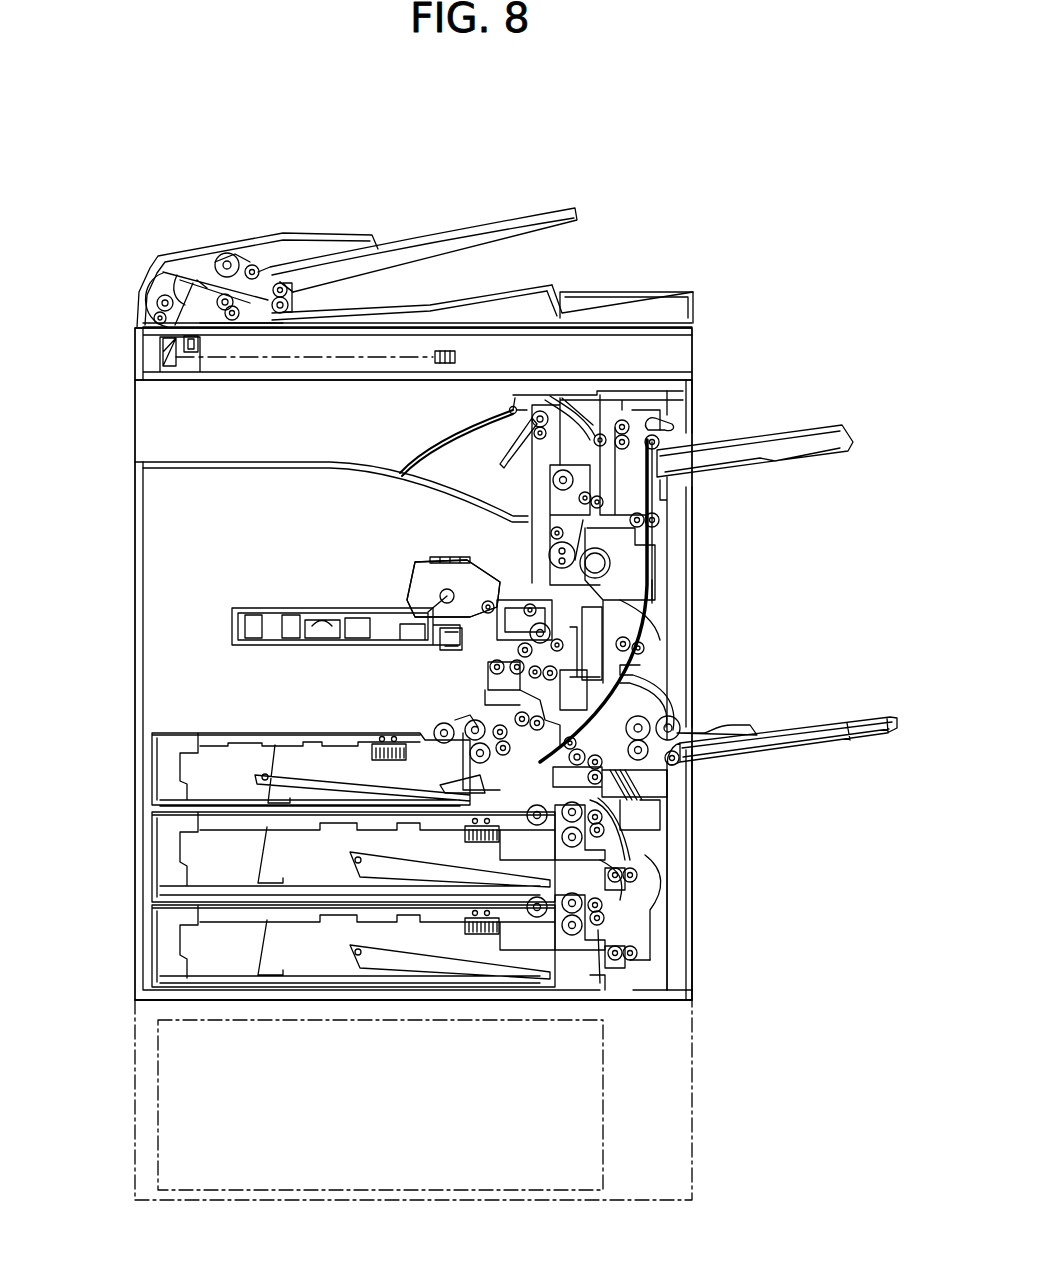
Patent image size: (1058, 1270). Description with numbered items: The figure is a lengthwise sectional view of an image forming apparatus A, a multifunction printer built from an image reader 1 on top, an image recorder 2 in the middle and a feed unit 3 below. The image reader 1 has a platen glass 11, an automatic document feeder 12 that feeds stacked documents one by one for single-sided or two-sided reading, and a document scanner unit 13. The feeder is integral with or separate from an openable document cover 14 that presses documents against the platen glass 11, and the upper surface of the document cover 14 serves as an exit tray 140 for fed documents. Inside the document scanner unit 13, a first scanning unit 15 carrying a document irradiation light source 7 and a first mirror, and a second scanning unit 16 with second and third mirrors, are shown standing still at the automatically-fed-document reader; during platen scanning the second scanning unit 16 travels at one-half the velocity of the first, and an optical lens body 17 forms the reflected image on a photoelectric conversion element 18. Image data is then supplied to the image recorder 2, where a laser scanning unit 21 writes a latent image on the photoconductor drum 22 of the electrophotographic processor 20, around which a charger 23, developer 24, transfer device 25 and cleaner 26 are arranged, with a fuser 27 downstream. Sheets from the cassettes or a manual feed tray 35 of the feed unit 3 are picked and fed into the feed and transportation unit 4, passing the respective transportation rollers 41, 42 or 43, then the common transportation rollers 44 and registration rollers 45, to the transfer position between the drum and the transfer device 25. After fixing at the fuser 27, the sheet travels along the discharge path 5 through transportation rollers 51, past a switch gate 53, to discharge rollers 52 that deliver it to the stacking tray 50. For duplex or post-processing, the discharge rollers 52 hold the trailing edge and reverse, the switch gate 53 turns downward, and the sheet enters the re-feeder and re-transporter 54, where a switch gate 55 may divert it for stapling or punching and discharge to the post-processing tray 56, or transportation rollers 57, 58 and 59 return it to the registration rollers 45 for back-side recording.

The image forming apparatus A is at (795, 175).
The image reading apparatus 1 is at (672, 251).
The image recorder 2 is at (755, 589).
The feed unit 3 is at (700, 898).
The feed and transportation unit 4 is at (628, 823).
The discharge path 5 is at (598, 428).
The document irradiation light source 7 is at (183, 290).
The platen glass 11 is at (506, 320).
The automatic document feeder capable of duplex reading (RADF) 12 is at (336, 245).
The document scanner unit 13 is at (662, 357).
The document cover 14 is at (642, 304).
The first scanning unit 15 is at (192, 352).
The second scanning unit 16 is at (173, 366).
The optical lens body 17 is at (425, 360).
The photoelectric conversion element 18 is at (455, 357).
The electrophotographic processor 20 is at (400, 542).
The laser scanning unit 21 is at (315, 607).
The photoconductor drum 22 is at (552, 633).
The charger 23 is at (505, 590).
The developer 24 is at (460, 646).
The transfer device 25 is at (665, 712).
The cleaner 26 is at (521, 600).
The fuser 27 is at (610, 557).
The manual feed tray 35 is at (850, 718).
The transportation rollers 41 is at (640, 954).
The transportation rollers 42 is at (640, 882).
The transportation rollers 43 is at (622, 796).
The transportation rollers 44 is at (515, 718).
The registration rollers 45 is at (645, 788).
The stacking tray 50 is at (300, 462).
The transportation rollers 51 is at (545, 484).
The discharge rollers 52 is at (500, 453).
The switch gate 53 is at (595, 430).
The re-feeder and re-transporter 54 is at (652, 580).
The switch gate 55 is at (670, 441).
The post-processing tray 56 is at (826, 442).
The transportation rollers 57 is at (660, 521).
The transportation rollers 58 is at (632, 644).
The transportation rollers 59 is at (470, 772).
The exit tray 140 is at (497, 289).